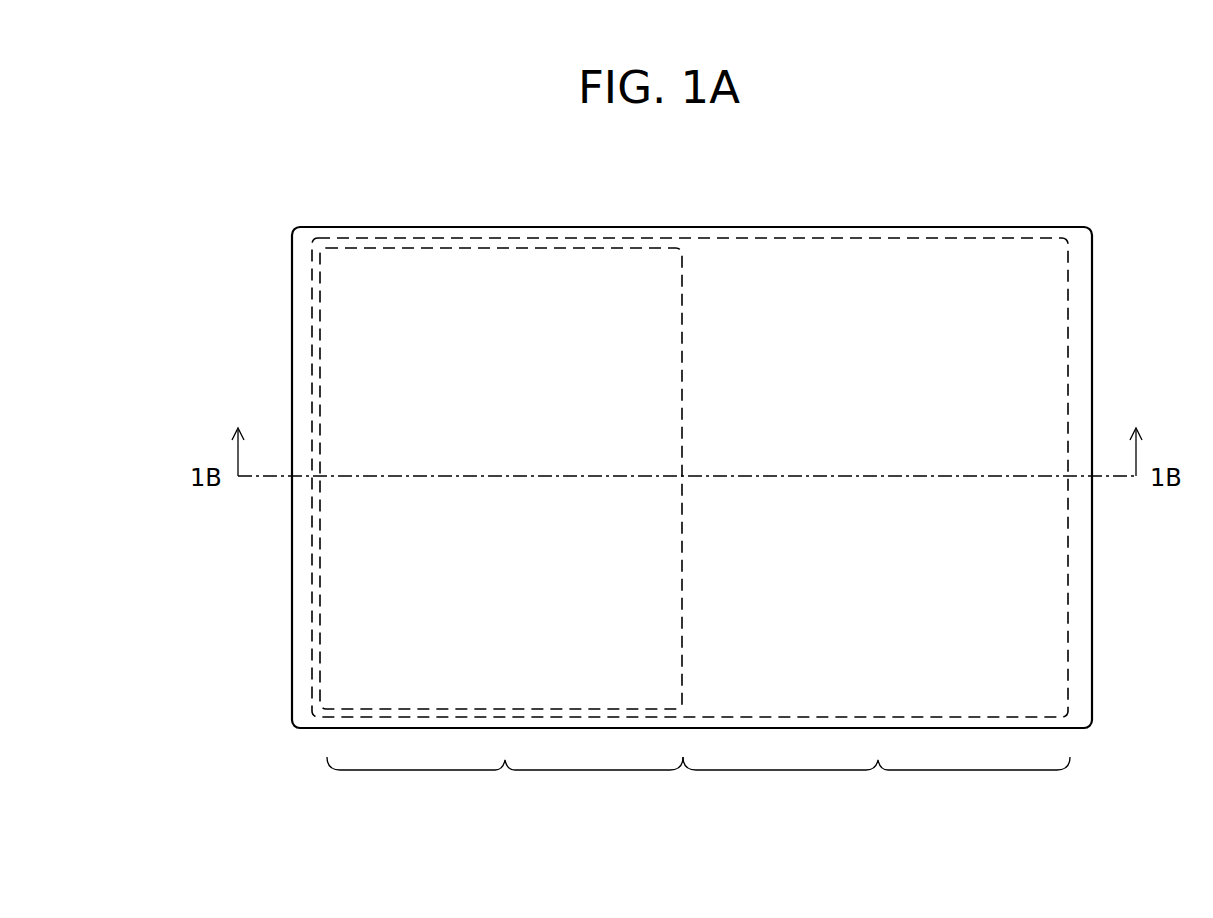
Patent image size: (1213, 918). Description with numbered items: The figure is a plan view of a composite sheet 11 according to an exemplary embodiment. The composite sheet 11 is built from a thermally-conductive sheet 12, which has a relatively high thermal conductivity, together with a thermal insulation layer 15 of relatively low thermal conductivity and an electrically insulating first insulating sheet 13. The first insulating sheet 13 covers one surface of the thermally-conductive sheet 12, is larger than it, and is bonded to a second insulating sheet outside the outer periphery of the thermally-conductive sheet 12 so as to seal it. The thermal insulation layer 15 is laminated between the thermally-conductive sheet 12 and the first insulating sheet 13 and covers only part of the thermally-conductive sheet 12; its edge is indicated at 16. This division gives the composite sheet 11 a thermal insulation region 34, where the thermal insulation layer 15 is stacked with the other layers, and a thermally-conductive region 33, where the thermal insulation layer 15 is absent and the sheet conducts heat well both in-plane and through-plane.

The composite sheet 11 is at (1052, 215).
The thermally-conductive sheet 12 is at (1042, 617).
The first insulating sheet 13 is at (1080, 300).
The thermal insulation layer 15 is at (355, 357).
The edge of electrode region 16 is at (358, 478).
The thermally-conductive region 33 is at (876, 785).
The thermal insulation region 34 is at (505, 785).